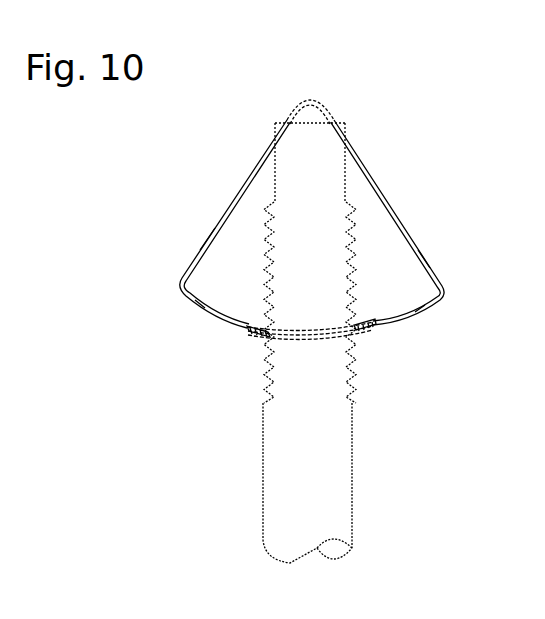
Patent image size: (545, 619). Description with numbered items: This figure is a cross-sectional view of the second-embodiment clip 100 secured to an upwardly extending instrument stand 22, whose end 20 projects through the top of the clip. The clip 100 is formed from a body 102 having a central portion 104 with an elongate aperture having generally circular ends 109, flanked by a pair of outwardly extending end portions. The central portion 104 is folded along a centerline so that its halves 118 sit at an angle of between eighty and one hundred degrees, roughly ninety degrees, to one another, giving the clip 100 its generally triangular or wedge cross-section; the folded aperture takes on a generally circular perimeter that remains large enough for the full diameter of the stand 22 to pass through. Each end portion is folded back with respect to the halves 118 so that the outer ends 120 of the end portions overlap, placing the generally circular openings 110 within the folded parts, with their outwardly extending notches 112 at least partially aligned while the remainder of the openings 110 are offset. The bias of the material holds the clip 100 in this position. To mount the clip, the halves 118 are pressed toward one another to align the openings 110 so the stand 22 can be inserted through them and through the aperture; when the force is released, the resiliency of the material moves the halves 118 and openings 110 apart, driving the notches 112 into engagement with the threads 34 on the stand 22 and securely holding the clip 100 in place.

The clip 100 is at (305, 78).
The end 20 is at (295, 128).
The instrument stand 22 is at (277, 460).
The threads 34 is at (268, 357).
The body 102 is at (335, 115).
The central portion 104 is at (378, 182).
The circular ends 109 is at (243, 183).
The opening 110 is at (230, 313).
The notch 112 is at (265, 343).
The halves 118 is at (203, 237).
The outer ends 120 is at (248, 330).